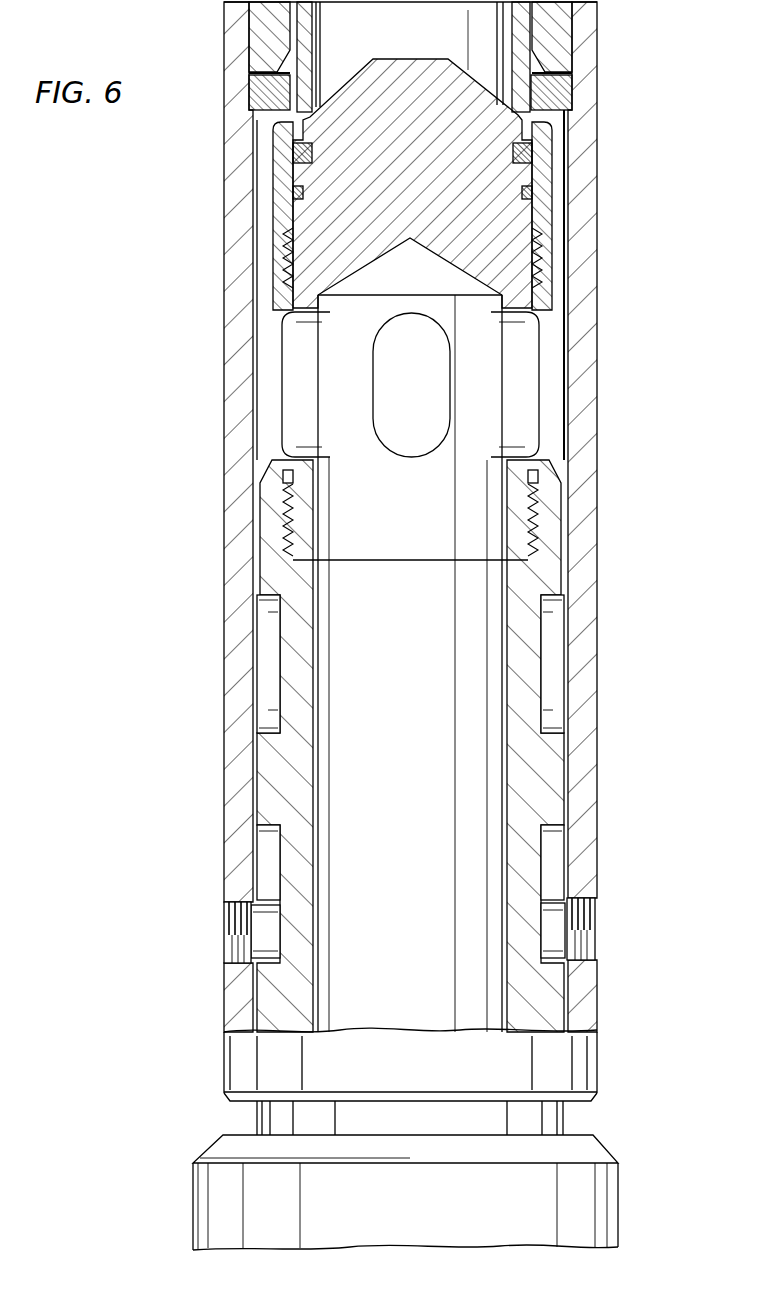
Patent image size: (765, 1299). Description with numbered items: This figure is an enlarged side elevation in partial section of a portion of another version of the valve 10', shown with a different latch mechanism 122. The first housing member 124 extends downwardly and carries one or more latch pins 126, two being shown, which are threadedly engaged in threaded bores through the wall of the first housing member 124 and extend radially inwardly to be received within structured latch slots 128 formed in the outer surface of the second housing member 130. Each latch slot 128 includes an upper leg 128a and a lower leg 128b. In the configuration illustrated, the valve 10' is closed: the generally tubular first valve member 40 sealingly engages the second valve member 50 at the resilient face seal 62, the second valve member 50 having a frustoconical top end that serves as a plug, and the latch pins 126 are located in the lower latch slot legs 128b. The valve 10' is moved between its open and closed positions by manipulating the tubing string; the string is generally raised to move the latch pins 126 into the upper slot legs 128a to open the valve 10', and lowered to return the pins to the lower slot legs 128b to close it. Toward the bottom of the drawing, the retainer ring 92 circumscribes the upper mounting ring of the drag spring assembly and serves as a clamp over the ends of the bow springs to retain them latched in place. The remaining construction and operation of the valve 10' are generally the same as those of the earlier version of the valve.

The valve 10' is at (352, 517).
The first valve member 40 is at (520, 28).
The second valve member 50 is at (500, 230).
The resilient face seal 62 is at (530, 148).
The retainer ring 92 is at (608, 1200).
The latch mechanism 122 is at (191, 853).
The first housing member 124 is at (583, 333).
The latch pins 126 is at (583, 943).
The latch slots 128 is at (265, 650).
The upper leg 128a is at (552, 727).
The lower leg 128b is at (543, 835).
The second housing member 130 is at (528, 652).